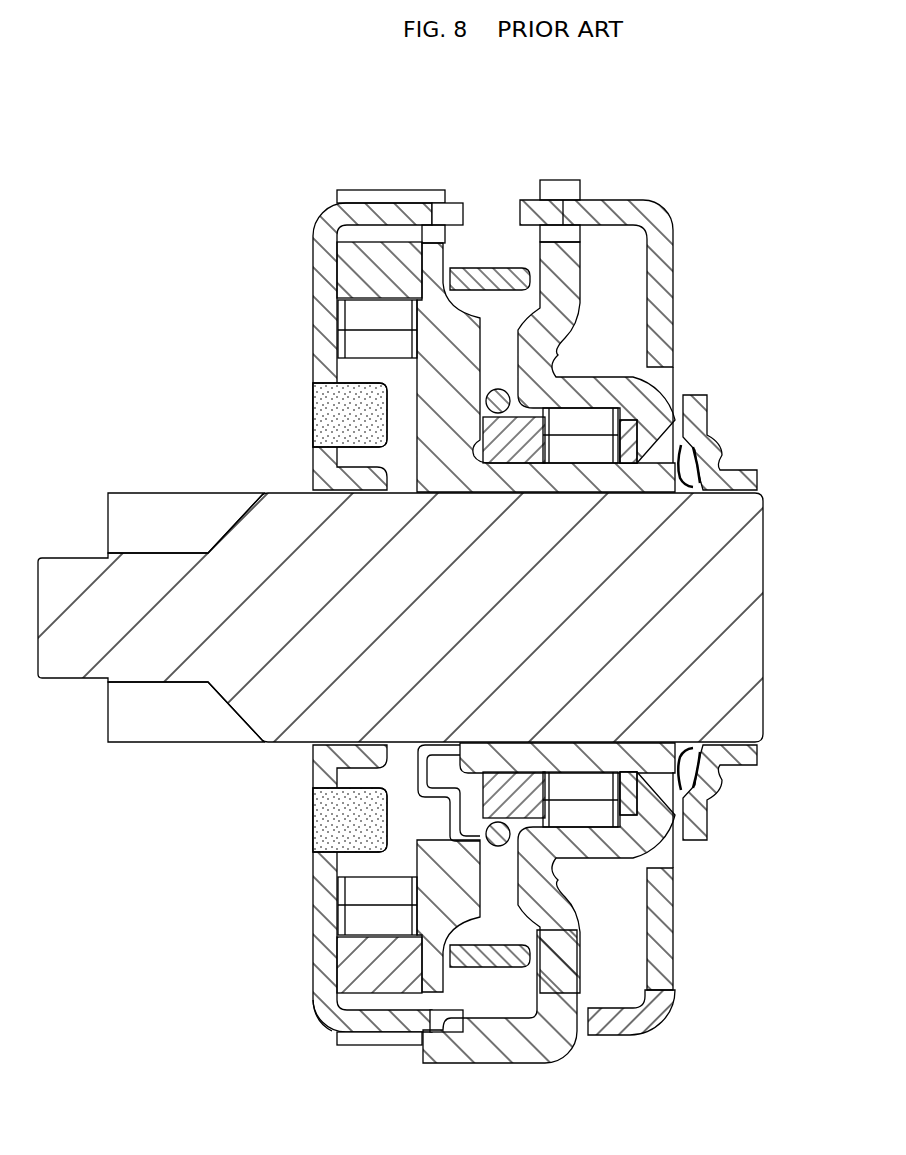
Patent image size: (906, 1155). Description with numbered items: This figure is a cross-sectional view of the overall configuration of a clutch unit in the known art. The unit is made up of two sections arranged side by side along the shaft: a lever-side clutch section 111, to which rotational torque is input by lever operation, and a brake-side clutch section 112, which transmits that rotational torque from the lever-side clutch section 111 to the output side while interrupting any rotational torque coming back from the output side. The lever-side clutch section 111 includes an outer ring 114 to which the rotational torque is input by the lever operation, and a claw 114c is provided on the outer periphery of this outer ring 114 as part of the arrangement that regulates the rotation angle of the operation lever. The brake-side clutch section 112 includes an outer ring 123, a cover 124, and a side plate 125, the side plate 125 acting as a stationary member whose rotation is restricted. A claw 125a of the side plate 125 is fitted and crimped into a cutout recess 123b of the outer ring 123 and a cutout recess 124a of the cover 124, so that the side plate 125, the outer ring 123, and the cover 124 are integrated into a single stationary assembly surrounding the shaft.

The lever-side clutch section 111 is at (686, 388).
The brake-side clutch section 112 is at (312, 297).
The outer ring 114 is at (658, 848).
The claw 114c is at (502, 1053).
The outer ring 123 is at (376, 247).
The cutout recess 123b is at (334, 1014).
The cover 124 is at (451, 258).
The cutout recess 124a is at (434, 998).
The side plate 125 is at (313, 240).
The claw 125a is at (387, 1024).